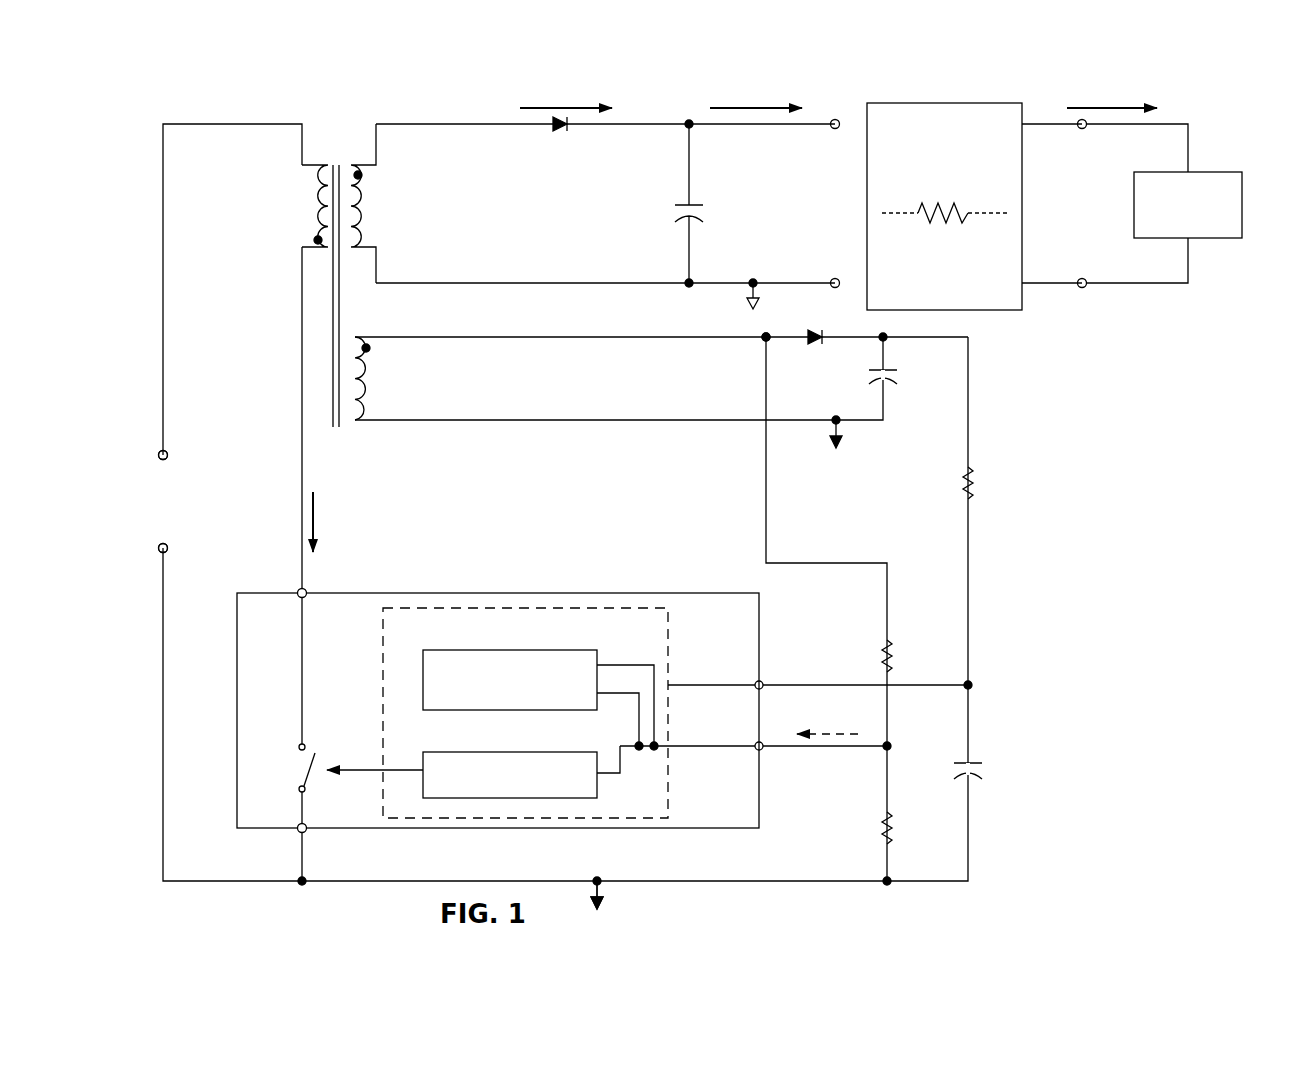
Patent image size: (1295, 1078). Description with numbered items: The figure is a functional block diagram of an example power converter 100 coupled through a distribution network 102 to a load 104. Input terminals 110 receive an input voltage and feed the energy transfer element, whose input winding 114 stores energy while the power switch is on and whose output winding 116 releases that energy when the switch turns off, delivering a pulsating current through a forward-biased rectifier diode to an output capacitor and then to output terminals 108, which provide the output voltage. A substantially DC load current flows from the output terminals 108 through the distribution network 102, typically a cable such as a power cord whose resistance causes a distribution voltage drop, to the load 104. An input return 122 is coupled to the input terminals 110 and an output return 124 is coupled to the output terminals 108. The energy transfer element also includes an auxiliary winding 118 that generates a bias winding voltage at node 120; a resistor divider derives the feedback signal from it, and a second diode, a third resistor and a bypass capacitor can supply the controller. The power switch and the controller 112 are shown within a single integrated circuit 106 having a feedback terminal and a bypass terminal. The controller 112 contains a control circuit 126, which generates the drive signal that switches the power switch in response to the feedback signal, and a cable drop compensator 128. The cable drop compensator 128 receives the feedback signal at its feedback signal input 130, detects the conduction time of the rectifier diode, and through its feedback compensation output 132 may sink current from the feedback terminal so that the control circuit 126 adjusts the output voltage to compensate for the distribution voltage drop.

The power converter 100 is at (1221, 66).
The distribution network 102 is at (1027, 310).
The load 104 is at (1215, 245).
The integrated circuit 106 is at (537, 593).
The output terminals 108 is at (835, 118).
The input terminals 110 is at (190, 456).
The controller 112 is at (672, 624).
The input winding 114 is at (298, 202).
The output winding 116 is at (378, 207).
The auxiliary winding 118 is at (378, 427).
The node 120 is at (758, 343).
The input return 122 is at (643, 890).
The output return 124 is at (740, 302).
The control circuit 126 is at (420, 763).
The cable drop compensator 128 is at (421, 674).
The feedback signal input 130 is at (610, 700).
The feedback compensation output 132 is at (612, 655).